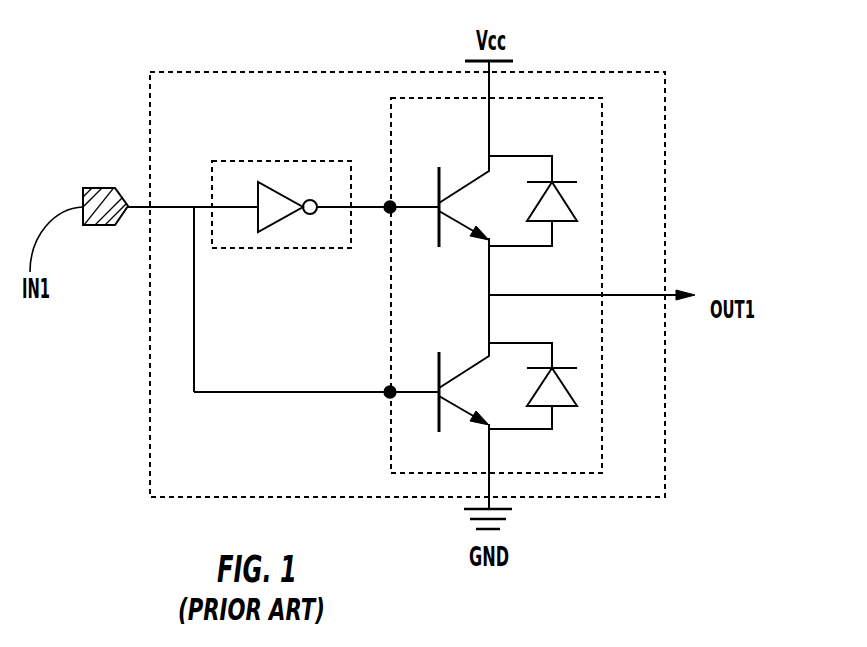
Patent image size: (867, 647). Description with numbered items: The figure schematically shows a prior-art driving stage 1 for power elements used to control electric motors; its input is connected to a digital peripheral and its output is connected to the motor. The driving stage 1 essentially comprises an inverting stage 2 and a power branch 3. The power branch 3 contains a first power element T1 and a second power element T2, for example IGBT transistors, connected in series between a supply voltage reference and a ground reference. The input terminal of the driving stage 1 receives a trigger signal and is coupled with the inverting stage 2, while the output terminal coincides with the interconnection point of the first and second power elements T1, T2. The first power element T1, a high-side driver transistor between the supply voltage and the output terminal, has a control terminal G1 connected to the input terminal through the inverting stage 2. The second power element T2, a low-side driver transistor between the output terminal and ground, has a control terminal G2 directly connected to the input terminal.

The driving stage 1 is at (646, 173).
The inverting stage 2 is at (300, 237).
The power branch 3 is at (600, 113).
The control terminal (gate) of first power element G1 is at (385, 205).
The control terminal (gate) of second power element G2 is at (384, 395).
The first power element T1 is at (508, 179).
The second power element T2 is at (508, 404).